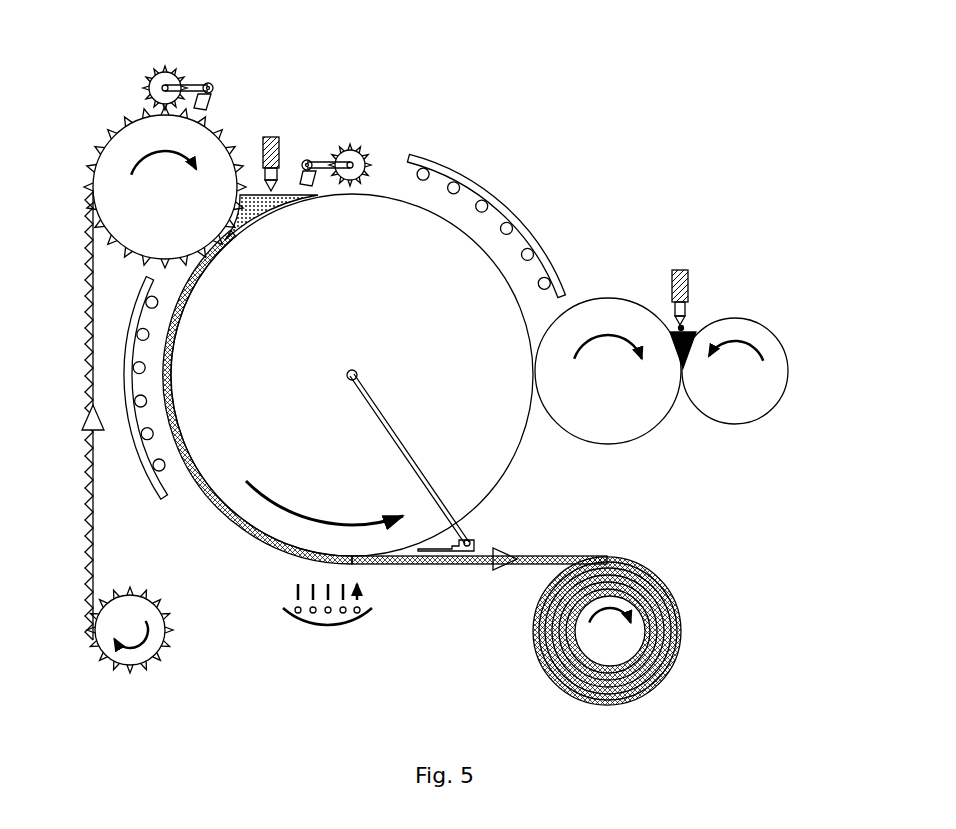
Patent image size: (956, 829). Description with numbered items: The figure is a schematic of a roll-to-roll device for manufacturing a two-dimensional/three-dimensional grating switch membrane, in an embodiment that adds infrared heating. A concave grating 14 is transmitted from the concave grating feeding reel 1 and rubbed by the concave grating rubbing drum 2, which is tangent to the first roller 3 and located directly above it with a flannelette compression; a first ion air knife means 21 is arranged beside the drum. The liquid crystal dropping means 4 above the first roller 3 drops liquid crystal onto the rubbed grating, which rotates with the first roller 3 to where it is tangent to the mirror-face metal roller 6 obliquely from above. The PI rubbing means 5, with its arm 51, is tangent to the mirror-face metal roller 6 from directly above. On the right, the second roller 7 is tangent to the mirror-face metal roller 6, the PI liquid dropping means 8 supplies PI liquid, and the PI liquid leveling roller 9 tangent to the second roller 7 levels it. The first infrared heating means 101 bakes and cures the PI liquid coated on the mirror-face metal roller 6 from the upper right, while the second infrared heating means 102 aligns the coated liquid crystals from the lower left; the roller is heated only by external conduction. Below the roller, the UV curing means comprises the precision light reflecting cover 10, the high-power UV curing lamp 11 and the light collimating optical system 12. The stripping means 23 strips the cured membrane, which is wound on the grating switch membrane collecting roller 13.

The concave grating feeding reel 1 is at (140, 630).
The concave grating rubbing drum 2 is at (167, 84).
The first ion air knife means 21 is at (208, 88).
The first roller 3 is at (167, 135).
The liquid crystal dropping means 4 is at (283, 150).
The PI rubbing means 5 is at (355, 140).
The connecting arm 51 is at (317, 175).
The mirror-face metal roller 6 is at (373, 205).
The first infrared heating means 101 is at (495, 195).
The second infrared heating means 102 is at (133, 443).
The second roller 7 is at (598, 305).
The PI liquid dropping means 8 is at (681, 270).
The PI liquid leveling roller 9 is at (735, 323).
The precision light reflecting cover 10 is at (340, 622).
The high-power UV curing lamp 11 is at (343, 612).
The light collimating optical system 12 is at (360, 597).
The 2D/3D grating switch membrane collecting roller 13 is at (677, 597).
The concave grating 14 is at (92, 560).
The stripping means 23 is at (467, 543).